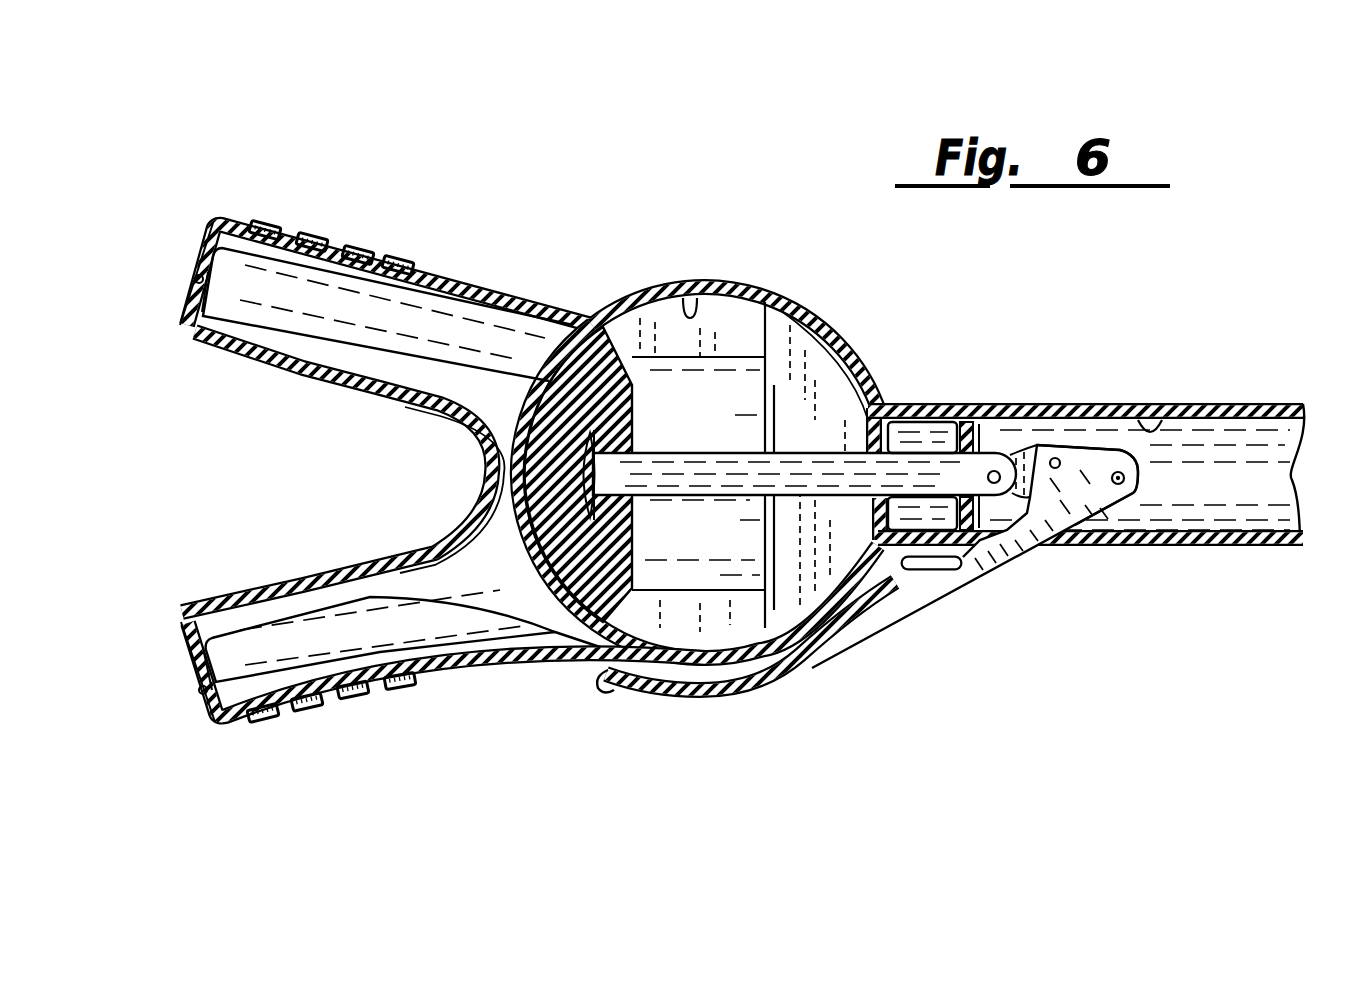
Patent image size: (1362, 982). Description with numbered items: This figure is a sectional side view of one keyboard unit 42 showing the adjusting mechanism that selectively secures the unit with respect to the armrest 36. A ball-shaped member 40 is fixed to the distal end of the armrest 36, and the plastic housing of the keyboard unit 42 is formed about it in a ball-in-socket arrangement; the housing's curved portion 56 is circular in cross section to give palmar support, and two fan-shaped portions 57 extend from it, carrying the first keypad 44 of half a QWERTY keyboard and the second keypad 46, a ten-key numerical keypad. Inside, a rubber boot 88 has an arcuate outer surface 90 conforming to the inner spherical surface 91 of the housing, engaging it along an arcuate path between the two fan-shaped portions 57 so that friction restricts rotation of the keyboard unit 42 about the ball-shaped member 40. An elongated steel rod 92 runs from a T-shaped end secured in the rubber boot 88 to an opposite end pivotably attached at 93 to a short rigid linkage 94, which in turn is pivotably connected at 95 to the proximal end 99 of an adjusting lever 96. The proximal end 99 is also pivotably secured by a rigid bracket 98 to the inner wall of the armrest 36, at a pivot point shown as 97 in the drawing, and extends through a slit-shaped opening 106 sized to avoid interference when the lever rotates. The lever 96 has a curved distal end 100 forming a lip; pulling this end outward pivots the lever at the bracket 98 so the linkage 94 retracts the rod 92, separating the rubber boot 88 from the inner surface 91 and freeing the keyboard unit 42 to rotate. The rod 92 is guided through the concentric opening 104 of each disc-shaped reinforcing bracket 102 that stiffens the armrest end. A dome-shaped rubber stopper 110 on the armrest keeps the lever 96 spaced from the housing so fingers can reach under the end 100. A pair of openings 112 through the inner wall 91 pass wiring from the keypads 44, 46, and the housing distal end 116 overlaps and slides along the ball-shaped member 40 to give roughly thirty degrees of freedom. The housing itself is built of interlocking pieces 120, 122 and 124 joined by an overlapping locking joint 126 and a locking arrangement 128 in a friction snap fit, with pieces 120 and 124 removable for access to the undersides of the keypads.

The armrest 36 is at (1258, 406).
The ball-shaped member 40 is at (852, 378).
The keyboard unit 42 is at (612, 204).
The first keypad 44 is at (396, 260).
The second keypad 46 is at (397, 688).
The curved portion 56 is at (740, 285).
The fan-shaped portion 57 is at (470, 287).
The rubber boot 88 is at (622, 530).
The arcuate outer surface 90 is at (505, 458).
The inner spherical surface 91 is at (684, 300).
The rod 92 is at (732, 442).
The pivot 93 is at (992, 469).
The linkage 94 is at (1022, 440).
The pivot 95 is at (1055, 457).
The adjusting lever 96 is at (1027, 553).
The pivot pin 97 is at (1130, 478).
The bracket 98 is at (1160, 430).
The proximal end 99 is at (1080, 442).
The curved distal end 100 is at (608, 688).
The disc-shaped reinforcing bracket 102 is at (940, 422).
The concentric opening 104 is at (868, 432).
The slit-shaped opening 106 is at (1095, 548).
The rubber stopper 110 is at (910, 600).
The openings 112 is at (582, 325).
The distal end 116 is at (815, 657).
The housing piece 120 is at (216, 232).
The housing piece 122 is at (277, 362).
The housing piece 124 is at (215, 703).
The overlapping locking joint 126 is at (196, 276).
The locking arrangement 128 is at (200, 683).